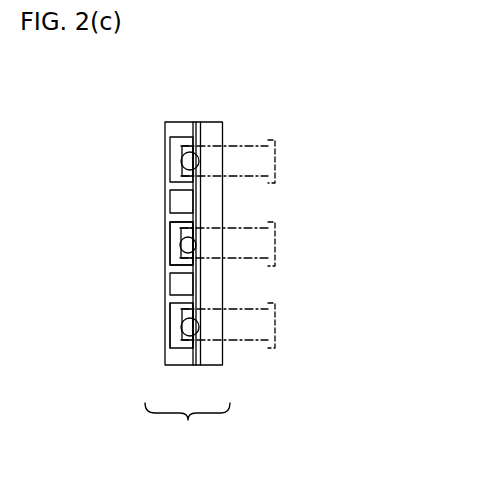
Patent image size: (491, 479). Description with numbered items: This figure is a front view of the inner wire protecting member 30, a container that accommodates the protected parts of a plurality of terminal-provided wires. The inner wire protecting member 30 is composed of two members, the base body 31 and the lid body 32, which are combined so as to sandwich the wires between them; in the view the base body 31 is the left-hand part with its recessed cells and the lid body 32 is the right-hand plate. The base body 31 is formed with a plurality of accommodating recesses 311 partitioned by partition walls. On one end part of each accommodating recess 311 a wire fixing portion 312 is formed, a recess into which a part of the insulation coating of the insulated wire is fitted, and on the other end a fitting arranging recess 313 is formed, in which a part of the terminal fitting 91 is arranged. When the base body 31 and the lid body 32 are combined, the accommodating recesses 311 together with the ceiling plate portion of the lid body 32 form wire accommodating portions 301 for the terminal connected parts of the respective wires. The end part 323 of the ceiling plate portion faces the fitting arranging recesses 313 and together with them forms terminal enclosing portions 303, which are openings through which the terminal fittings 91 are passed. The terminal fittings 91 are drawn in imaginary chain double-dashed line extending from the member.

The inner wire protecting member 30 is at (237, 84).
The base body 31 is at (177, 122).
The lid body 32 is at (208, 122).
The wire accommodating portion 301 is at (176, 248).
The accommodating recess 311 is at (188, 177).
The wire fixing portion 312 is at (194, 158).
The fitting arranging recess 313 is at (172, 337).
The end part of the ceiling plate portion 323 is at (193, 335).
The terminal fitting 91 is at (276, 348).
The terminal enclosing portion 303 is at (187, 426).